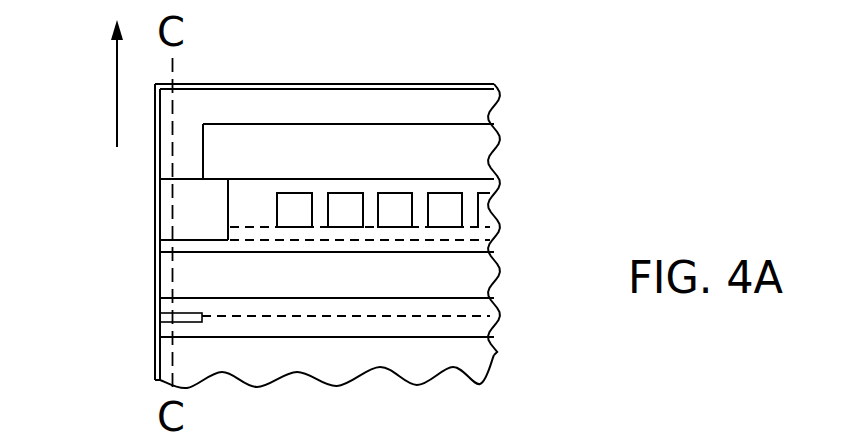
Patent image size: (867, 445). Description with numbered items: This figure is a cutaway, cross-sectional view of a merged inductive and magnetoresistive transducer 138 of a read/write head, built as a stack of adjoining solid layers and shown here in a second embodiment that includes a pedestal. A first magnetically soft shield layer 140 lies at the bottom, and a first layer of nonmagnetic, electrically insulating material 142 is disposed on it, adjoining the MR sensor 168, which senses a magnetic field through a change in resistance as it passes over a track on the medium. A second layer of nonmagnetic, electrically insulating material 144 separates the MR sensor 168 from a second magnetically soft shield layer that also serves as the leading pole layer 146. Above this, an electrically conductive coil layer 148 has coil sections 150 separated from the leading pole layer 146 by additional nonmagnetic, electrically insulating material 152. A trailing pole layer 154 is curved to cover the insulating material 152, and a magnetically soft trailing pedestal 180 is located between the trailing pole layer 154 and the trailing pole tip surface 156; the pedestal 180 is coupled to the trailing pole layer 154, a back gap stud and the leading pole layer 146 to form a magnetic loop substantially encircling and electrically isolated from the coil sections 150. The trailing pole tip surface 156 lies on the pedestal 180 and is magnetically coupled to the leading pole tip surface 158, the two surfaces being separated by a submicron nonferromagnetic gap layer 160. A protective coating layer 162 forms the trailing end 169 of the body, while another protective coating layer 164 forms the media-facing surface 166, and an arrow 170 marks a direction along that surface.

The transducer 138 is at (480, 24).
The first magnetically soft shield layer 140 is at (487, 352).
The first layer of nonmagnetic, electrically insulating material 142 is at (487, 328).
The second layer of nonmagnetic, electrically insulating material 144 is at (482, 305).
The leading pole layer 146 is at (473, 283).
The coil layer 148 is at (518, 217).
The coil sections 150 is at (452, 218).
The nonmagnetic, electrically insulating material 152 is at (250, 235).
The trailing pole layer 154 is at (473, 162).
The trailing pole tip surface 156 is at (174, 197).
The leading pole tip surface 158 is at (173, 281).
The gap layer 160 is at (157, 246).
The protective coating layer 162 is at (472, 108).
The protective coating layer 164 is at (156, 366).
The media-facing surface 166 is at (144, 338).
The MR sensor 168 is at (158, 317).
The trailing end 169 is at (301, 75).
The direction arrow 170 is at (115, 76).
The trailing pedestal 180 is at (205, 202).